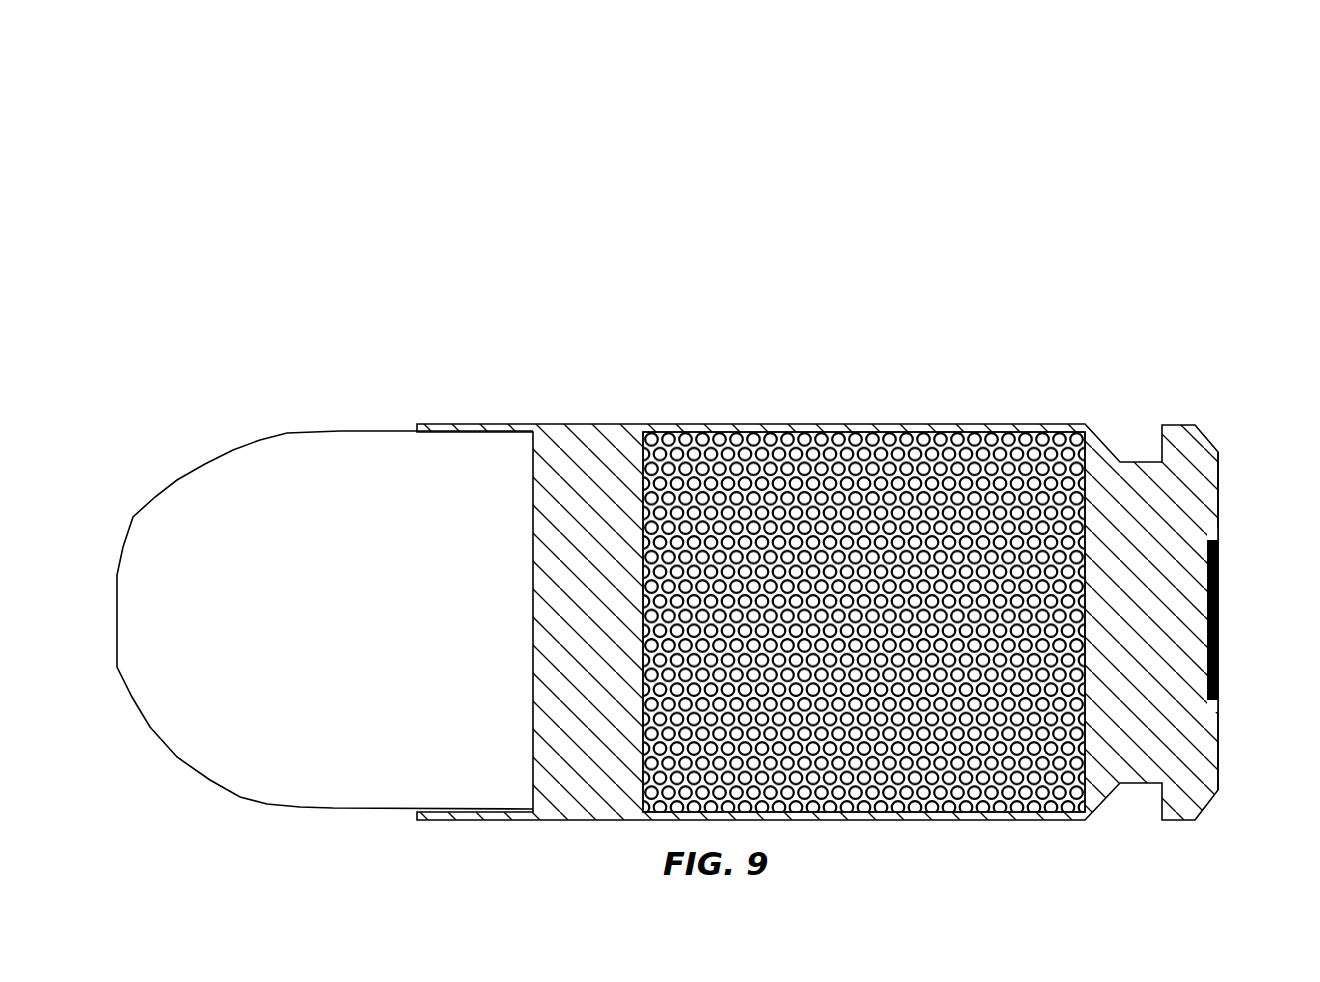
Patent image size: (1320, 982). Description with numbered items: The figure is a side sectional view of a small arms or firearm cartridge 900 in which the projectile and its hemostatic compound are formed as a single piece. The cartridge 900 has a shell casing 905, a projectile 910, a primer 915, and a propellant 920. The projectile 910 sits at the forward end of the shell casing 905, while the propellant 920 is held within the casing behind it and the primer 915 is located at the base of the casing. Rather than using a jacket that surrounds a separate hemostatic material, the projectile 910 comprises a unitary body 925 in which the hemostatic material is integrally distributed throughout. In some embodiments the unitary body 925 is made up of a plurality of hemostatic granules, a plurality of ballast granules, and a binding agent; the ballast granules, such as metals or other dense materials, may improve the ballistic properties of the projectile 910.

The small arms or firearm cartridge 900 is at (499, 160).
The shell casing 905 is at (622, 446).
The projectile 910 is at (216, 400).
The primer 915 is at (1219, 612).
The propellant 920 is at (749, 440).
The unitary body 925 is at (180, 482).